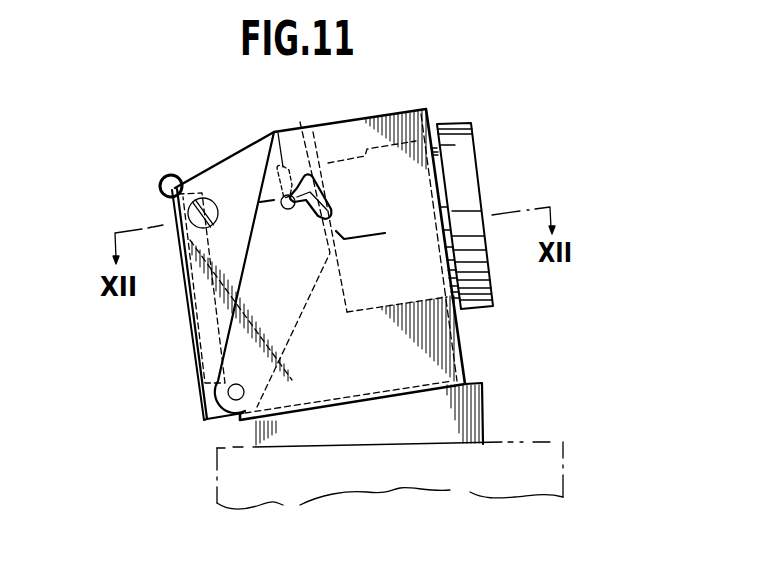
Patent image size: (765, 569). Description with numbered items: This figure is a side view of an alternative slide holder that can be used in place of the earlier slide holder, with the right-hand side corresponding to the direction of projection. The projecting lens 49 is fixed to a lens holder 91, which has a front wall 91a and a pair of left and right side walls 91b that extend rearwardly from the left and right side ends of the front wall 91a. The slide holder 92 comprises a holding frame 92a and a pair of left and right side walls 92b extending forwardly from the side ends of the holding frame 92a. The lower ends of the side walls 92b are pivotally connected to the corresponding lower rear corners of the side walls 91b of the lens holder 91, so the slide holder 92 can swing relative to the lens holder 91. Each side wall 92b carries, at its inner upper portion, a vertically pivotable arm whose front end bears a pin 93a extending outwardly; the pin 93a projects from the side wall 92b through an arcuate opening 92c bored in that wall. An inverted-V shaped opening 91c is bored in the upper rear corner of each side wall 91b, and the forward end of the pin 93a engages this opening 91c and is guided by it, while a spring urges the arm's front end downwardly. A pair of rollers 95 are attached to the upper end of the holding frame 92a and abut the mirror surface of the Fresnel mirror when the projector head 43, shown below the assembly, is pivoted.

The projector head 43 is at (548, 442).
The projecting lens 49 is at (478, 159).
The lens holder 91 is at (370, 101).
The front wall 91a is at (427, 112).
The side walls 91b is at (458, 358).
The inverted-V shaped opening 91c is at (310, 177).
The slide holder 92 is at (171, 360).
The holding frame 92a is at (182, 300).
The side walls 92b is at (236, 155).
The arcuate opening 92c is at (277, 132).
The pin 93a is at (287, 209).
The rollers 95 is at (163, 177).